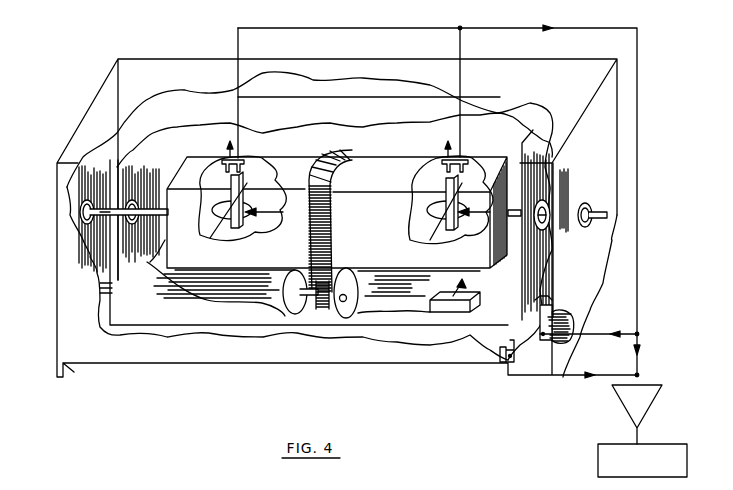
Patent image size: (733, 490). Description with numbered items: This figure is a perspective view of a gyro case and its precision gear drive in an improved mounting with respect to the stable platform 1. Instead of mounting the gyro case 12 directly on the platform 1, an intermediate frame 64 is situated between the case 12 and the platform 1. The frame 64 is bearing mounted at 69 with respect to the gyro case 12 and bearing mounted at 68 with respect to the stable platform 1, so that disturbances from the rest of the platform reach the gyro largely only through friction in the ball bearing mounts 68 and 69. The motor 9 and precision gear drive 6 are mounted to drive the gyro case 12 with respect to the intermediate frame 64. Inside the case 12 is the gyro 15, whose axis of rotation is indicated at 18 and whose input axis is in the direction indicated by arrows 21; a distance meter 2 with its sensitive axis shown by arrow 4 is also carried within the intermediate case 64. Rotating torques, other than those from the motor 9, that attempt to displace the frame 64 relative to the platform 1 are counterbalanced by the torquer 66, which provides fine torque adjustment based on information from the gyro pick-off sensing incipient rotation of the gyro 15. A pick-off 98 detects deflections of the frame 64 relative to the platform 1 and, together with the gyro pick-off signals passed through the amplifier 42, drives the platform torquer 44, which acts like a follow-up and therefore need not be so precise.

The stable platform 1 is at (133, 67).
The distance meter 2 is at (440, 299).
The arrow indicating sensitive axis 4 is at (453, 289).
The precision gear drive unit 6 is at (319, 216).
The motor drive 9 is at (258, 288).
The gyro case 12 is at (393, 167).
The gyro 15 is at (211, 214).
The axis of rotation 18 is at (224, 172).
The input axis 21 is at (265, 214).
The amplifier 42 is at (648, 400).
The air-jet torquer 44 is at (600, 448).
The intermediate frame 64 is at (190, 106).
The torquer 66 is at (545, 328).
The ball bearing mount 68 is at (72, 208).
The ball bearing mount 69 is at (135, 173).
The pick-off 98 is at (505, 357).